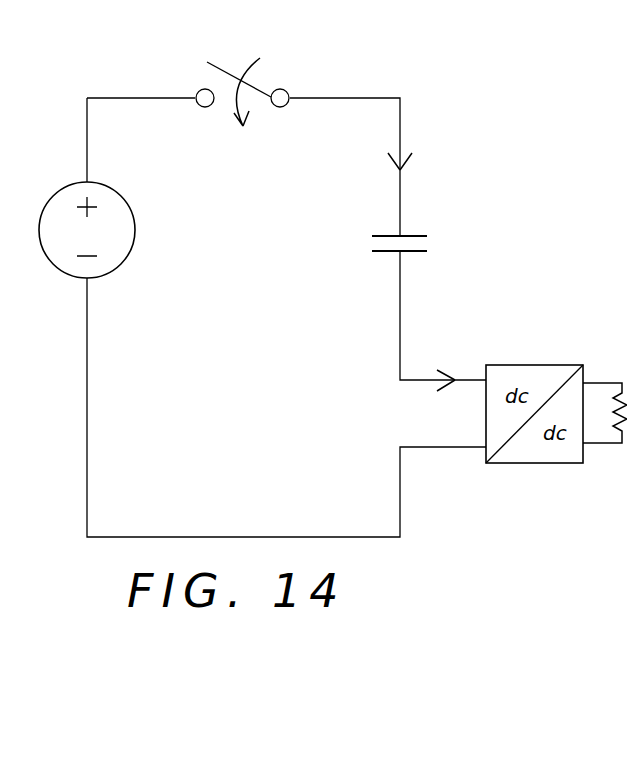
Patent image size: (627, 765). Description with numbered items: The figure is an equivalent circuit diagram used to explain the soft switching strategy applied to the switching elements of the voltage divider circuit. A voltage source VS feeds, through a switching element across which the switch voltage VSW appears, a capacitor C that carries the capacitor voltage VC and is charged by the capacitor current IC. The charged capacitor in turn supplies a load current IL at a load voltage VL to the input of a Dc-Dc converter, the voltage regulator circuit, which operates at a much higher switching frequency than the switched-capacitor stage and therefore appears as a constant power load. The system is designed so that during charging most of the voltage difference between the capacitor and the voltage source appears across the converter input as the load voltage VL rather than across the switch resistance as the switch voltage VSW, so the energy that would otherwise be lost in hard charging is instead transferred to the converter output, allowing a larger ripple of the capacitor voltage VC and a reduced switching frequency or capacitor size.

The voltage source VS is at (68, 230).
The switch voltage VSW is at (300, 24).
The capacitor C is at (388, 245).
The capacitor voltage VC is at (438, 204).
The capacitor current IC is at (413, 155).
The load current IL is at (446, 366).
The load voltage VL is at (355, 378).